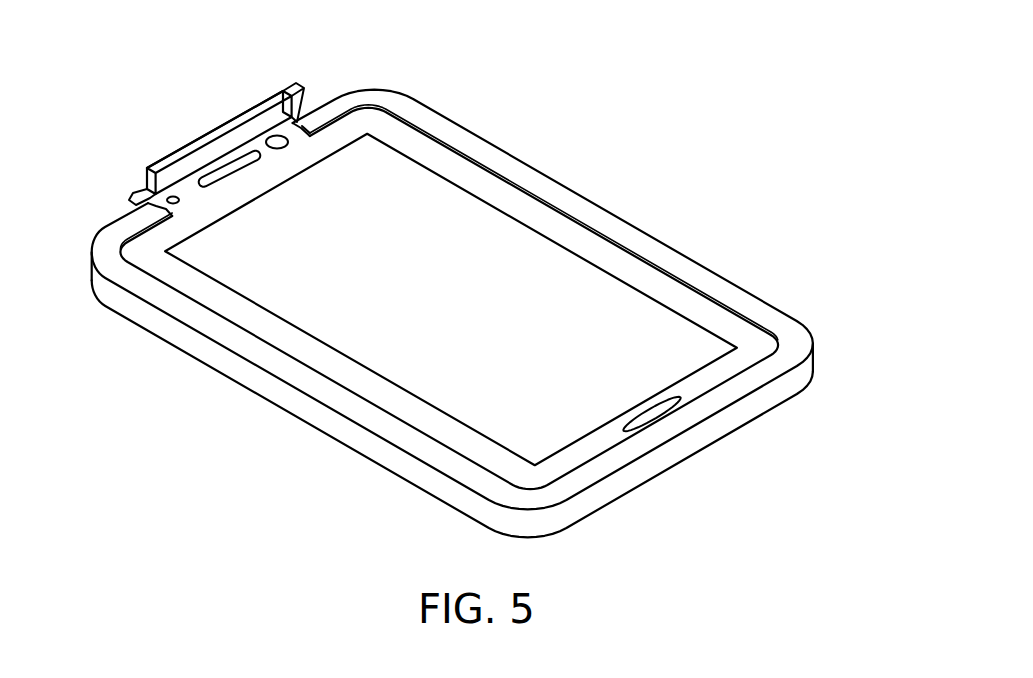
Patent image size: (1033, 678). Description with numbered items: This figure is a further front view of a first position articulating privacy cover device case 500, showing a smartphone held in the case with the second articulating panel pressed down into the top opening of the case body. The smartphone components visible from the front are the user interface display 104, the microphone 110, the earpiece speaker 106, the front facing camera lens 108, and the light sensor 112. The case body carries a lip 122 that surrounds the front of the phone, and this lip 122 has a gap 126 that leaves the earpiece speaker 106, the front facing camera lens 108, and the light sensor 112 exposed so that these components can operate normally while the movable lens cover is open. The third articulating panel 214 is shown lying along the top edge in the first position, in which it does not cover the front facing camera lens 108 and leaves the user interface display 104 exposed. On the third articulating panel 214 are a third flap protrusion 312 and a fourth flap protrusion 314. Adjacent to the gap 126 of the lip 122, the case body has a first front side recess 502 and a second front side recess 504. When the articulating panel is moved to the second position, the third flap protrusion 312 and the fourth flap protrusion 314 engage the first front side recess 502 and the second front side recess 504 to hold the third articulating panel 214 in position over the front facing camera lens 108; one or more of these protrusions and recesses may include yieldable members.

The further front view of a first position articulating privacy cover device case 500 is at (643, 112).
The user interface display 104 is at (490, 242).
The earpiece speaker 106 is at (207, 165).
The front facing camera lens 108 is at (277, 133).
The microphone 110 is at (683, 399).
The light sensor 112 is at (178, 206).
The lip 122 is at (617, 228).
The gap 126 is at (217, 195).
The third articulating panel 214 is at (207, 130).
The third flap protrusion 312 is at (130, 193).
The fourth flap protrusion 314 is at (300, 85).
The first front side recess 502 is at (142, 210).
The second front side recess 504 is at (313, 133).